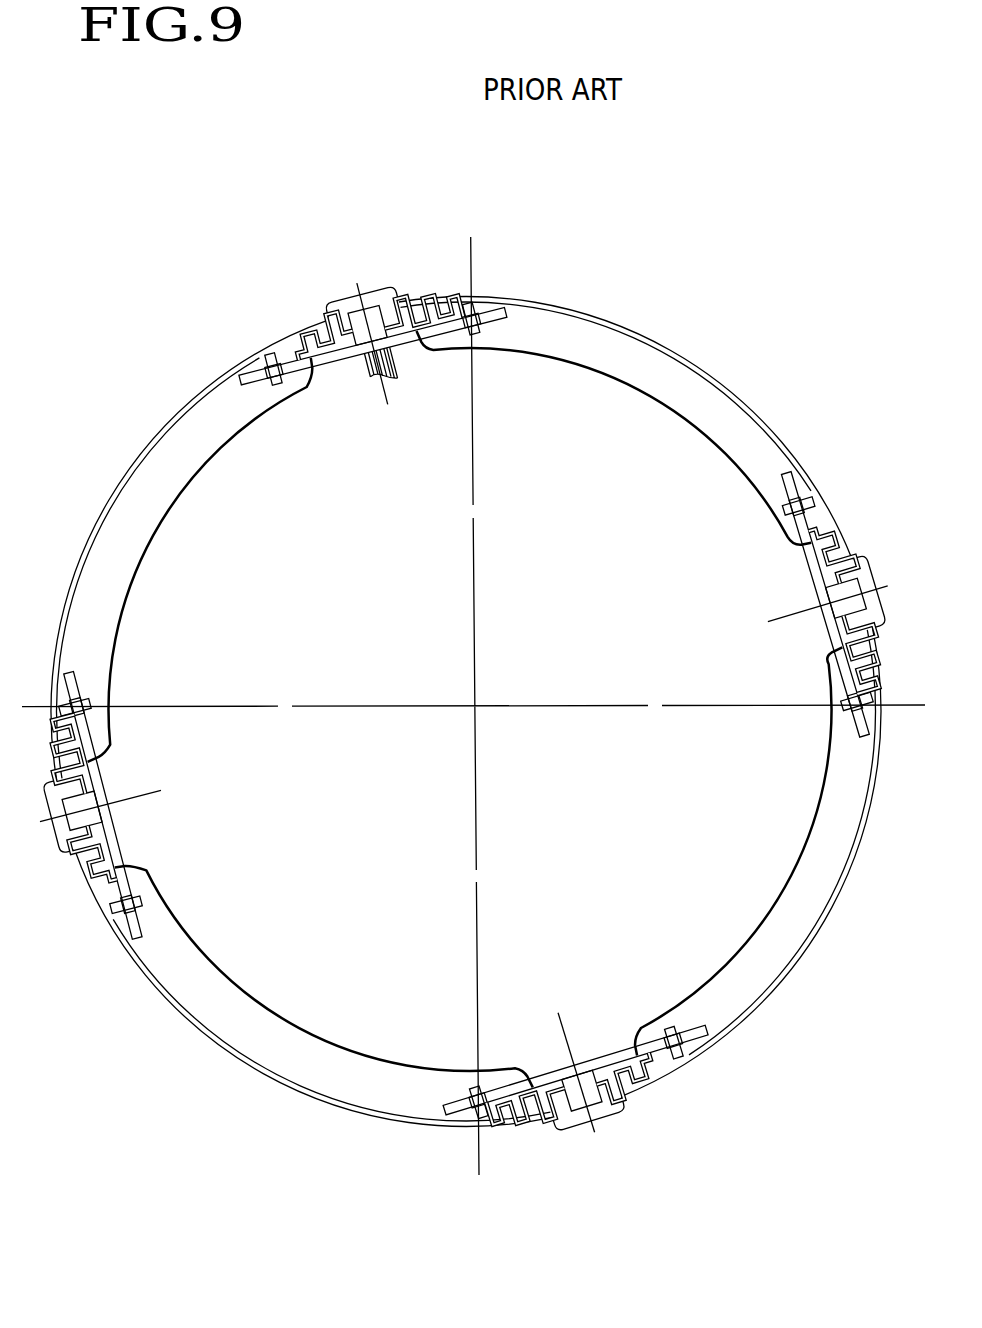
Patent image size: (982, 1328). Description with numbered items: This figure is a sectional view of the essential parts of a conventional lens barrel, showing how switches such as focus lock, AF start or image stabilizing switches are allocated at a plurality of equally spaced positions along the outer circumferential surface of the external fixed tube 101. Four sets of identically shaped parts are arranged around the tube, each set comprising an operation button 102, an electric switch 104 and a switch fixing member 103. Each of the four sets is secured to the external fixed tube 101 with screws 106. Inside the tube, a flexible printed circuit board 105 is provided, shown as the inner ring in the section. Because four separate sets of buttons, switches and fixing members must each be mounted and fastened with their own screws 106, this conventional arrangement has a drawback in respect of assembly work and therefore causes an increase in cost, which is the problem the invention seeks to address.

The external fixed tube 101 is at (483, 300).
The operation button 102 is at (365, 303).
The switch fixing member 103 is at (412, 337).
The electric switch 104 is at (353, 298).
The flexible printed circuit board 105 is at (206, 468).
The screw 106 is at (478, 322).